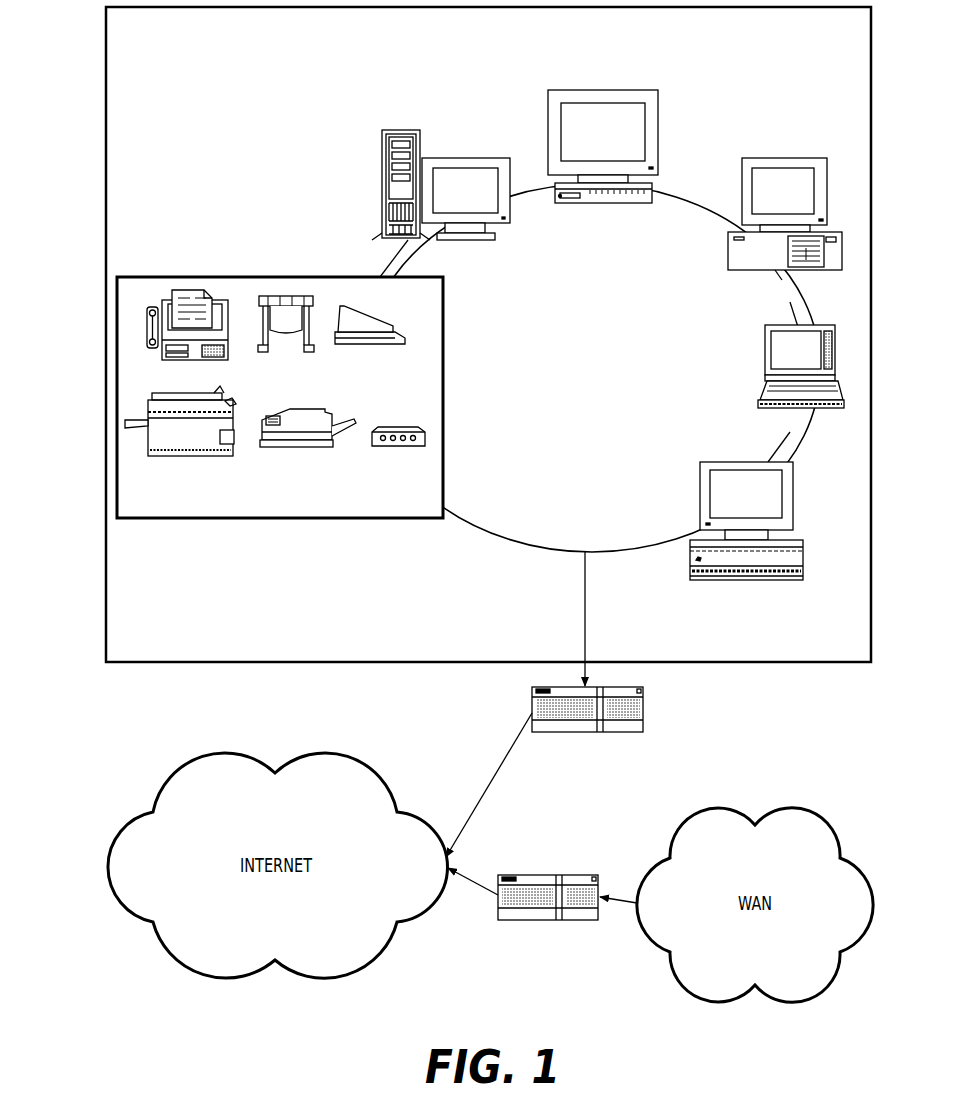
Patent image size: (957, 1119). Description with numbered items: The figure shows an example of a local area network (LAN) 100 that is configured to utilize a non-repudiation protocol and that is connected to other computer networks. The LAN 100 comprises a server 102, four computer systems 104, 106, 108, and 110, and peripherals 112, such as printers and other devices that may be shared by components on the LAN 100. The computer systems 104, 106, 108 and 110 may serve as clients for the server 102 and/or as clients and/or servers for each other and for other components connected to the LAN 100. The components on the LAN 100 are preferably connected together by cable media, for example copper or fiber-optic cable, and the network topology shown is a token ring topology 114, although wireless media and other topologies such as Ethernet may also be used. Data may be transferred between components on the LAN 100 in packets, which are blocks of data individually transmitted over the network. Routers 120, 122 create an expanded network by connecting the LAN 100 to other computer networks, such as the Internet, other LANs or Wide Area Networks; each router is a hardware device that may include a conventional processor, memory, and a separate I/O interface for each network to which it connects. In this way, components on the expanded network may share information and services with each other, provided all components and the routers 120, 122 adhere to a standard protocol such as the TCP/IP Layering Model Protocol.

The local area network 100 is at (447, 662).
The server 102 is at (445, 157).
The computer system 104 is at (607, 89).
The computer system 106 is at (785, 158).
The computer system 108 is at (765, 388).
The computer system 110 is at (700, 491).
The peripherals 112 is at (292, 518).
The token ring topology 114 is at (558, 394).
The router 120 is at (645, 708).
The router 122 is at (565, 875).